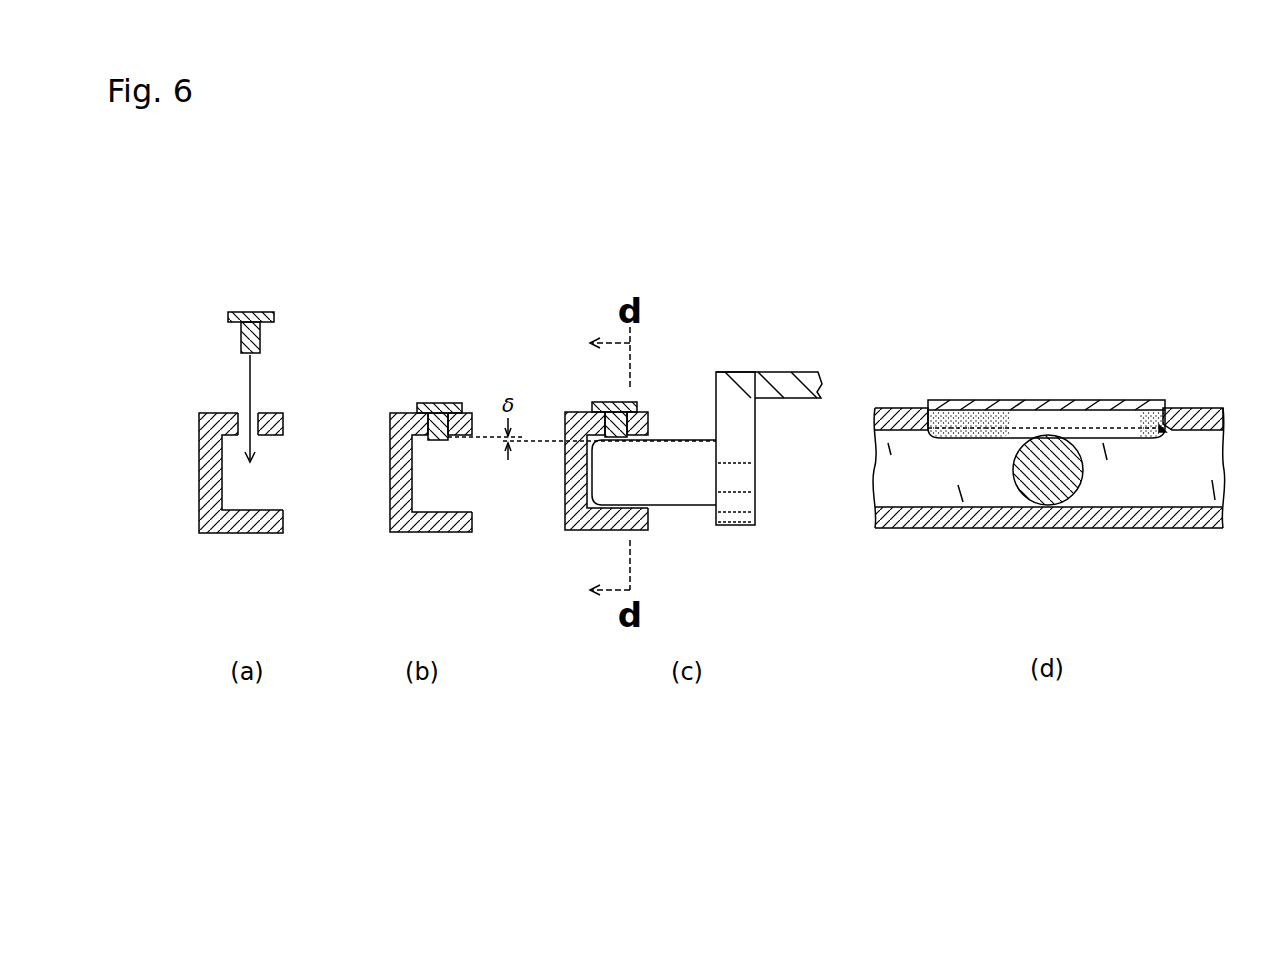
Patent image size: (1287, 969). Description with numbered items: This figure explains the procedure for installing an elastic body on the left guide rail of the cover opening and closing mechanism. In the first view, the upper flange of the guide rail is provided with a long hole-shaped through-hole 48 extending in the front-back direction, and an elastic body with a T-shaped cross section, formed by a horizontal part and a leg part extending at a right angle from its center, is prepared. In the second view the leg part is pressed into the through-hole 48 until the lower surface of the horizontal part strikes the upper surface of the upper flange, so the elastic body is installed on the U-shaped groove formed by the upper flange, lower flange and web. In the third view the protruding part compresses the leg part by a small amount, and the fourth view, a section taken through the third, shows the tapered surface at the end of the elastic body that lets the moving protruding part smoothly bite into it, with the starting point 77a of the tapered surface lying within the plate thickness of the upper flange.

The through-hole 48 is at (260, 413).
The starting point 77a is at (1168, 430).